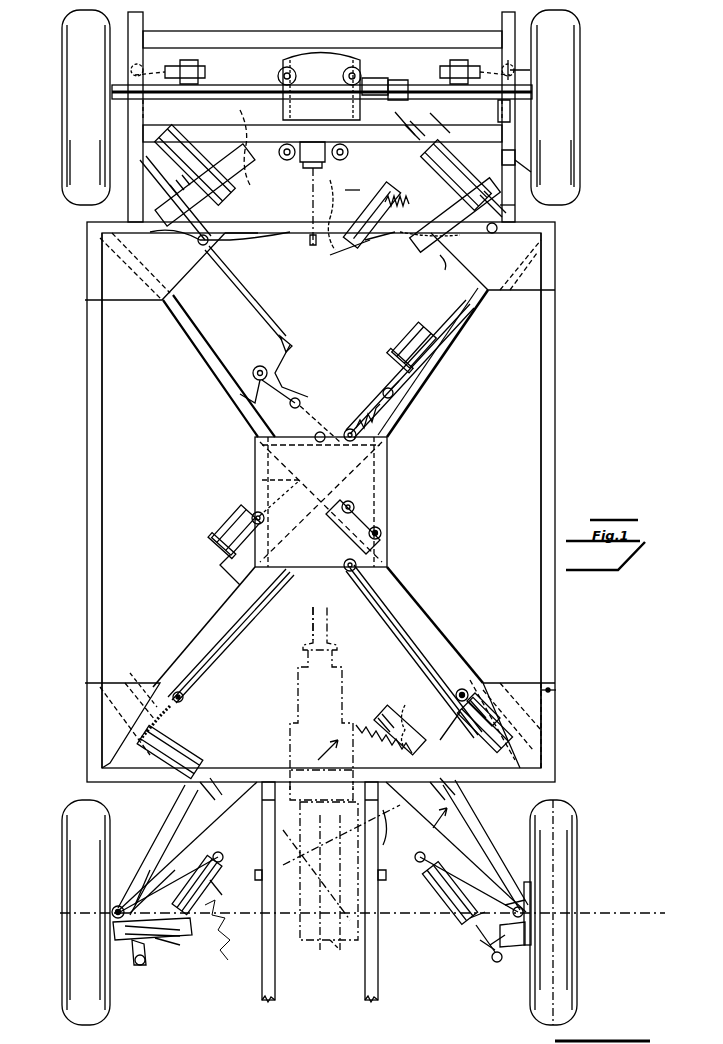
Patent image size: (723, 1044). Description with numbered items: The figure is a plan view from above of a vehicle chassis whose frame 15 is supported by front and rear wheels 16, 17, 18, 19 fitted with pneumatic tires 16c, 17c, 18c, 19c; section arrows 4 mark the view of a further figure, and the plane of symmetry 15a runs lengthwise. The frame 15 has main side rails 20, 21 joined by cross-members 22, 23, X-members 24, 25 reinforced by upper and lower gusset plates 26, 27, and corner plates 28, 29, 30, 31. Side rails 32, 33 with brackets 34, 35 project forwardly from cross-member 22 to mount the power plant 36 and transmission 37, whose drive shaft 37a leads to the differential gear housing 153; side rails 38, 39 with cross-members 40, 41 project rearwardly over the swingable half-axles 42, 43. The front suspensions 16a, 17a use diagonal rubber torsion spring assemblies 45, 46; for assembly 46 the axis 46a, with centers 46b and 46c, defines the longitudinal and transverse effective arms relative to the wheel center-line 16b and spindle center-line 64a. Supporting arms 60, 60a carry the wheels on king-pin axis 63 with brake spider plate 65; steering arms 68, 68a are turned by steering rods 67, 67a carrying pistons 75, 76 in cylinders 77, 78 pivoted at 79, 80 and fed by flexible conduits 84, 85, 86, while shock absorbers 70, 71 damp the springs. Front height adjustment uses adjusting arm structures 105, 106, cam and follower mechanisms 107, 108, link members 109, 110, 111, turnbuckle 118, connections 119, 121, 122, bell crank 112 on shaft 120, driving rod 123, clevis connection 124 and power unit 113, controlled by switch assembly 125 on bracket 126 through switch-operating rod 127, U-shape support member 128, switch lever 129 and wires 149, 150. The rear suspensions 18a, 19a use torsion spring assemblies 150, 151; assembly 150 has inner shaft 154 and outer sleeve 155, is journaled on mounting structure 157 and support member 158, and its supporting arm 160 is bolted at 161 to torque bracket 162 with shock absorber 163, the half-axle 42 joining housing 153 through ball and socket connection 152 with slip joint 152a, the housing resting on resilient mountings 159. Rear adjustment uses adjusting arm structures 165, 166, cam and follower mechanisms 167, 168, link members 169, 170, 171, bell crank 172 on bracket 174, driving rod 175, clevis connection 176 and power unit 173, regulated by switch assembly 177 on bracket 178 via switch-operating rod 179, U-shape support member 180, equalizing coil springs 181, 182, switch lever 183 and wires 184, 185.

The section line 4 is at (382, 791).
The frame or body structure 15 is at (560, 352).
The vertical longitudinal center-plane 15a is at (300, 790).
The left front wheel 16 is at (578, 850).
The left front wheel suspension 16a is at (430, 920).
The wheel center-line 16b is at (555, 815).
The pneumatic tire 16c is at (560, 832).
The right front wheel 17 is at (62, 942).
The right front wheel suspension 17a is at (172, 945).
The pneumatic tire 17c is at (78, 850).
The left rear wheel 18 is at (580, 92).
The left rear suspension 18a is at (442, 268).
The pneumatic tire 18c is at (565, 197).
The right rear wheel 19 is at (62, 60).
The right rear suspension 19a is at (252, 185).
The pneumatic tire 19c is at (82, 145).
The main side rail 20 is at (556, 420).
The main side rail 21 is at (95, 505).
The cross-member 22 is at (222, 770).
The cross-member 23 is at (226, 268).
The X-member 24 is at (436, 372).
The X-member 25 is at (208, 367).
The upper gusset plate 26 is at (390, 478).
The lower gusset plate 27 is at (265, 462).
The corner plate 28 is at (528, 720).
The corner plate 29 is at (116, 700).
The corner plate 30 is at (530, 286).
The corner plate 31 is at (128, 287).
The side rail 32 is at (380, 985).
The side rail 33 is at (262, 980).
The bracket 34 is at (386, 845).
The bracket 35 is at (232, 886).
The power plant 36 is at (342, 950).
The transmission 37 is at (287, 742).
The drive shaft 37a is at (313, 240).
The side rail 38 is at (515, 25).
The side rail 39 is at (135, 22).
The cross-member 40 is at (160, 130).
The cross-member 41 is at (205, 31).
The half-axle 42 is at (505, 60).
The half-axle 43 is at (205, 80).
The torsion spring assembly 45 is at (200, 790).
The torsion spring assembly 46 is at (535, 760).
The axis of torsion spring assembly 46a is at (560, 688).
The center of longitudinal effective arm 46b is at (552, 693).
The center of transverse effective arm 46c is at (300, 912).
The supporting arm 60 is at (462, 846).
The supporting arm 60a is at (185, 835).
The king-pin axis 63 is at (524, 908).
The wheel spindle center-line 64a is at (588, 915).
The brake spider plate 65 is at (540, 897).
The steering rod 67 is at (490, 950).
The steering rod 67a is at (140, 965).
The steering arm 68 is at (508, 940).
The steering arm 68a is at (110, 925).
The shock absorber 70 is at (532, 950).
The shock absorber 71 is at (184, 948).
The double-acting piston 75 is at (470, 866).
The double-acting piston 76 is at (192, 868).
The cylinder 77 is at (462, 938).
The cylinder 78 is at (178, 884).
The pivotal connection 79 is at (220, 835).
The pivotal connection 80 is at (458, 826).
The flexible conduit 84 is at (516, 906).
The flexible conduit 85 is at (150, 872).
The flexible conduit 86 is at (256, 875).
The adjusting arm structure 105 is at (470, 718).
The adjusting arm structure 106 is at (184, 704).
The cam and follower mechanism 107 is at (496, 700).
The cam and follower mechanism 108 is at (153, 687).
The link member 109 is at (440, 650).
The link member 110 is at (215, 680).
The link member 111 is at (348, 428).
The bell crank 112 is at (370, 520).
The power unit 113 is at (408, 330).
The adjusting turnbuckle 118 is at (466, 688).
The threaded connection 119 is at (345, 575).
The shaft 120 is at (382, 533).
The threaded connection 121 is at (355, 505).
The pivotal connection 122 is at (340, 456).
The threaded driving rod 123 is at (358, 410).
The clevis connection 124 is at (386, 388).
The switch assembly 125 is at (382, 720).
The bracket 126 is at (476, 732).
The switch-operating rod 127 is at (390, 787).
The U-shape support member 128 is at (455, 808).
The switch lever 129 is at (358, 748).
The electrical wire 149 is at (408, 718).
The rear torsion spring assembly 150 is at (452, 186).
The rear torsion spring assembly 151 is at (170, 168).
The ball and socket joint connection 152 is at (345, 62).
The slip joint 152a is at (392, 86).
The differential gear housing 153 is at (308, 55).
The inner shaft element 154 is at (517, 172).
The outer sleeve structure 155 is at (448, 200).
The mounting structure 157 is at (445, 207).
The support member 158 is at (396, 80).
The resilient mounting 159 is at (395, 70).
The supporting arm 160 is at (516, 158).
The bolted connection 161 is at (512, 110).
The torque bracket 162 is at (520, 72).
The shock absorber 163 is at (508, 55).
The adjusting arm structure 165 is at (478, 232).
The adjusting arm structure 166 is at (196, 206).
The cam and follower mechanism 167 is at (488, 236).
The cam and follower mechanism 168 is at (195, 245).
The link member 169 is at (322, 352).
The link member 170 is at (258, 302).
The link member 171 is at (330, 440).
The bell crank 172 is at (288, 402).
The power unit 173 is at (232, 526).
The supporting bracket 174 is at (250, 392).
The driving rod 175 is at (262, 480).
The clevis connection 176 is at (252, 514).
The switch assembly 177 is at (378, 240).
The bracket 178 is at (352, 238).
The switch-operating rod 179 is at (468, 213).
The U-shape support member 180 is at (440, 130).
The equalizing coil spring 181 is at (388, 245).
The equalizing coil spring 182 is at (452, 238).
The switch lever 183 is at (396, 200).
The electrical wire 184 is at (338, 185).
The electrical wire 185 is at (360, 190).